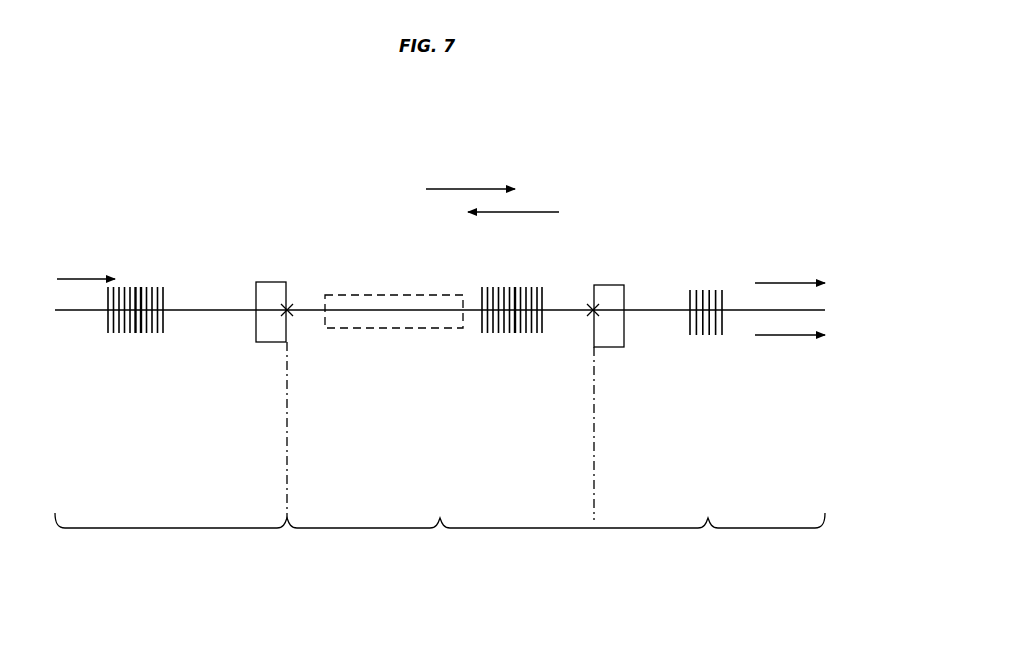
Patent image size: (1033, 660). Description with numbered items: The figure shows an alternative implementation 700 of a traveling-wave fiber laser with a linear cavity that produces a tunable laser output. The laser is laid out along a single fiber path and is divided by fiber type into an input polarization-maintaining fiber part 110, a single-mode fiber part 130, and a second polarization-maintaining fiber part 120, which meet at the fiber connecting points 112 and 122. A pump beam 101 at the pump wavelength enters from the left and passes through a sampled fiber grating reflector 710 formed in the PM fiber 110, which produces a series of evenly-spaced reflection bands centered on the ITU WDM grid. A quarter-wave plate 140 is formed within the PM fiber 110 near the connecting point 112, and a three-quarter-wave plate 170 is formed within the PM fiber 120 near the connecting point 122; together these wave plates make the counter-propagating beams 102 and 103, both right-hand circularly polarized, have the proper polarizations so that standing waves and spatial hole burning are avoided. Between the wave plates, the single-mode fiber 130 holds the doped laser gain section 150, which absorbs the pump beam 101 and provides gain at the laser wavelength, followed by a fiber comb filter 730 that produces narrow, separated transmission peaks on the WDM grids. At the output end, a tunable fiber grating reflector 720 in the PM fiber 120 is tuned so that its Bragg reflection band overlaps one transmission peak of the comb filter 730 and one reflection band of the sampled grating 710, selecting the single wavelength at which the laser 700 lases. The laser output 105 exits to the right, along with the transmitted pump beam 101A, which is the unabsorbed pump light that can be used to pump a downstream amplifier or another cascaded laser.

The traveling-wave laser implementation 700 is at (333, 112).
The pump beam 101 is at (88, 277).
The transmitted pump beam 101A is at (763, 337).
The counter propagating beam 102 is at (473, 187).
The counter propagating beam 103 is at (538, 210).
The laser output 105 is at (788, 280).
The input polarization-maintaining fiber part 110 is at (172, 569).
The fiber connecting point 112 is at (290, 303).
The polarization-maintaining fiber part 120 is at (708, 571).
The fiber connecting point 122 is at (592, 304).
The single-mode fiber part 130 is at (440, 572).
The quarter-wave plate 140 is at (273, 342).
The laser gain section 150 is at (387, 295).
The three-quarter-wave plate 170 is at (607, 347).
The sampled fiber grating reflector 710 is at (148, 333).
The tunable fiber grating reflector 720 is at (710, 335).
The fiber comb filter 730 is at (517, 333).